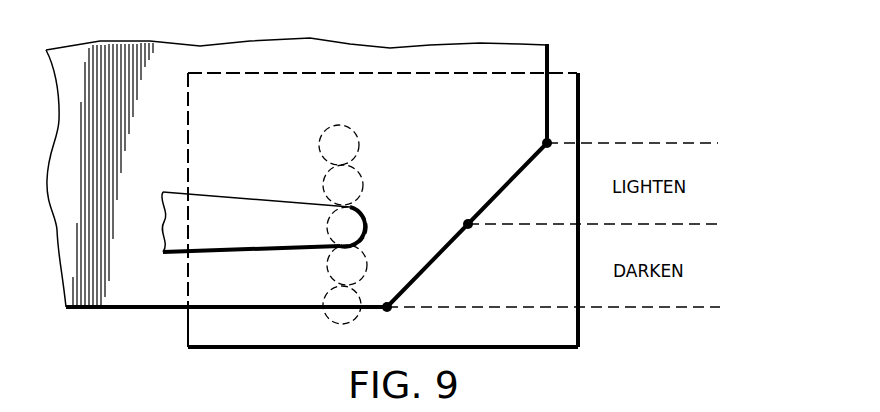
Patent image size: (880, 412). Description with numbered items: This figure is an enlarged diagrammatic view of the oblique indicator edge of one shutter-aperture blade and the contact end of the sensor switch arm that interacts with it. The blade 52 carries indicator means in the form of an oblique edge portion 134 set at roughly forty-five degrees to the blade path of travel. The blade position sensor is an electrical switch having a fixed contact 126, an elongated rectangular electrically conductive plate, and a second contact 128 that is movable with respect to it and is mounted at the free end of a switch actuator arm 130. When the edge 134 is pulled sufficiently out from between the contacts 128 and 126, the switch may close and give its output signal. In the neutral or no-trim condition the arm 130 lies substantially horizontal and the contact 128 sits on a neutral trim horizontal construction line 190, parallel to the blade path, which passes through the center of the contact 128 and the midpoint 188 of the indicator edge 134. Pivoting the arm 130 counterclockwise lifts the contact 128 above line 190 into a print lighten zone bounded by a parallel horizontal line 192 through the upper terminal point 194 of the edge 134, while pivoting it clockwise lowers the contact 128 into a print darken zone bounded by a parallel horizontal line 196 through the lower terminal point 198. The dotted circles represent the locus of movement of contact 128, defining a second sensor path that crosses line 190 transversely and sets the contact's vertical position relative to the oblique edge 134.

The blade 52 is at (126, 294).
The fixed contact 126 is at (276, 340).
The second contact 128 is at (346, 184).
The switch actuator arm 130 is at (266, 245).
The oblique edge portion 134 is at (528, 164).
The midpoint 188 is at (465, 223).
The neutral trim horizontal construction line 190 is at (628, 224).
The parallel horizontal line 192 is at (650, 143).
The upper terminal point 194 is at (545, 143).
The parallel horizontal line 196 is at (623, 308).
The lower terminal point 198 is at (390, 320).